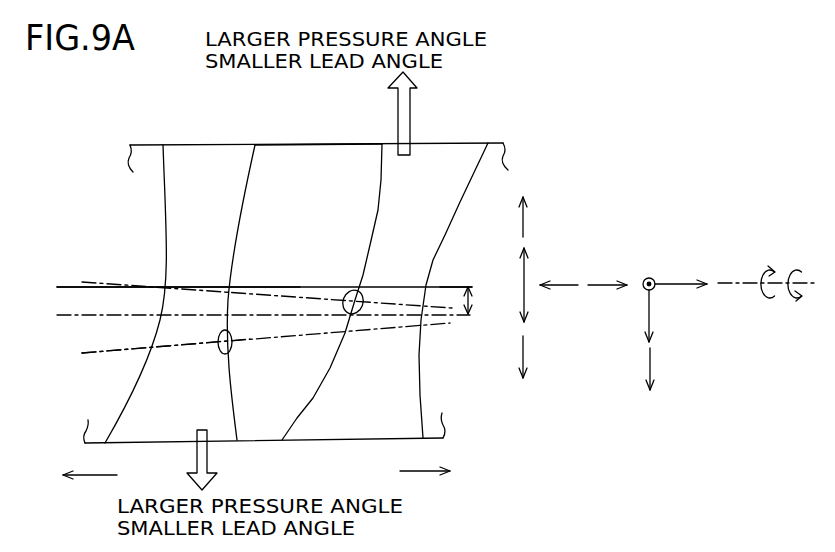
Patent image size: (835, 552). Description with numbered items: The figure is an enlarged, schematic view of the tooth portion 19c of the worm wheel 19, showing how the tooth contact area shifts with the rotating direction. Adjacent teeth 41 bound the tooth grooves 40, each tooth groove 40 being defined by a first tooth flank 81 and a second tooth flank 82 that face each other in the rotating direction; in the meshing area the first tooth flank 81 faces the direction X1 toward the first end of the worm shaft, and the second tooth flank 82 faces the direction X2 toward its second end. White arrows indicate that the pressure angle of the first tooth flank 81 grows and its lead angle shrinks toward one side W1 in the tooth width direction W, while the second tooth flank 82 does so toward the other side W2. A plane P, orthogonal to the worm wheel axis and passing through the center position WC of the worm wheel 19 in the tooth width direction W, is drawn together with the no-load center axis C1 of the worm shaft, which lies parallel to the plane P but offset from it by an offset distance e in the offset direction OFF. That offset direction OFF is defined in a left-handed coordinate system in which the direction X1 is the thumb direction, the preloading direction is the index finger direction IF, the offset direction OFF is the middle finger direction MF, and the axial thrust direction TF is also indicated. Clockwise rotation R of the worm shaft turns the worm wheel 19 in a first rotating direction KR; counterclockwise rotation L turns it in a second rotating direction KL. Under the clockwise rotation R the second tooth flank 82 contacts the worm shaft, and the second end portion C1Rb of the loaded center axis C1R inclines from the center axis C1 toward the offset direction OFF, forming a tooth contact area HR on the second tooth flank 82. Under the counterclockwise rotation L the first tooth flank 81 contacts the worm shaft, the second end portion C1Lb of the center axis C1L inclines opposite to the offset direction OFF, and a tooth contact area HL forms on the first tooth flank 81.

The worm wheel 19 is at (495, 100).
The tooth portion 19c is at (502, 142).
The tooth groove 40 is at (307, 270).
The tooth 41 is at (310, 170).
The first tooth flank 81 is at (167, 212).
The second tooth flank 82 is at (232, 250).
The plane P is at (68, 289).
The center axis C1L is at (388, 288).
The second end portion C1Lb is at (100, 288).
The center axis C1 is at (120, 316).
The center axis C1R is at (375, 332).
The second end portion C1Rb is at (97, 355).
The tooth contact area HL is at (343, 289).
The tooth contact area HR is at (237, 348).
The center position WC is at (458, 285).
The tooth width direction W is at (522, 285).
The one side W1 is at (526, 227).
The other side W2 is at (527, 346).
The offset distance e is at (474, 302).
The second rotating direction KL is at (90, 477).
The first rotating direction KR is at (425, 473).
The direction X1 is at (603, 287).
The direction X2 is at (560, 287).
The index finger direction IF is at (648, 278).
The thrust force TF is at (683, 284).
The middle finger direction MF is at (652, 310).
The offset direction OFF is at (651, 365).
The clockwise rotation R is at (776, 267).
The counterclockwise rotation L is at (802, 298).